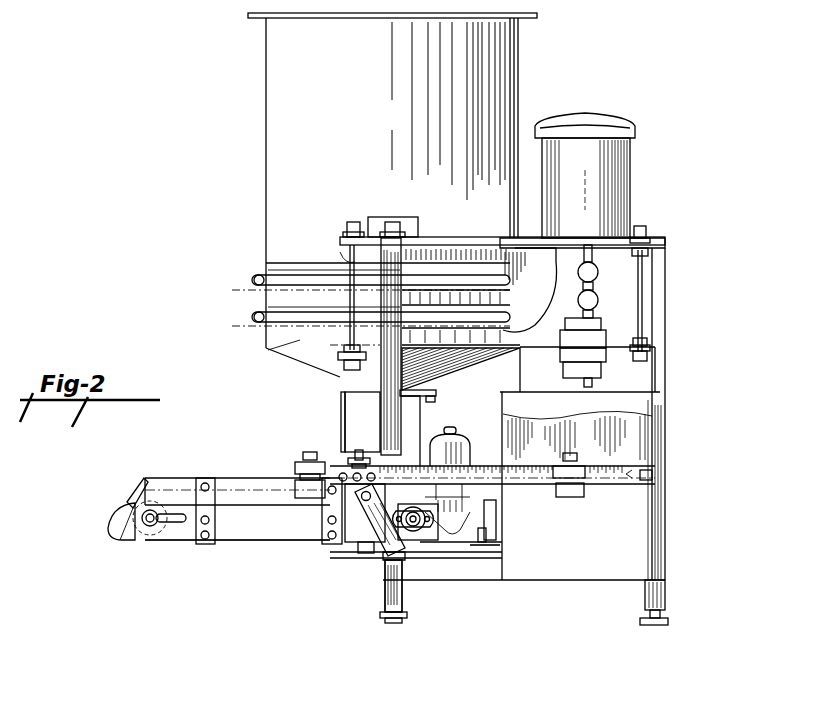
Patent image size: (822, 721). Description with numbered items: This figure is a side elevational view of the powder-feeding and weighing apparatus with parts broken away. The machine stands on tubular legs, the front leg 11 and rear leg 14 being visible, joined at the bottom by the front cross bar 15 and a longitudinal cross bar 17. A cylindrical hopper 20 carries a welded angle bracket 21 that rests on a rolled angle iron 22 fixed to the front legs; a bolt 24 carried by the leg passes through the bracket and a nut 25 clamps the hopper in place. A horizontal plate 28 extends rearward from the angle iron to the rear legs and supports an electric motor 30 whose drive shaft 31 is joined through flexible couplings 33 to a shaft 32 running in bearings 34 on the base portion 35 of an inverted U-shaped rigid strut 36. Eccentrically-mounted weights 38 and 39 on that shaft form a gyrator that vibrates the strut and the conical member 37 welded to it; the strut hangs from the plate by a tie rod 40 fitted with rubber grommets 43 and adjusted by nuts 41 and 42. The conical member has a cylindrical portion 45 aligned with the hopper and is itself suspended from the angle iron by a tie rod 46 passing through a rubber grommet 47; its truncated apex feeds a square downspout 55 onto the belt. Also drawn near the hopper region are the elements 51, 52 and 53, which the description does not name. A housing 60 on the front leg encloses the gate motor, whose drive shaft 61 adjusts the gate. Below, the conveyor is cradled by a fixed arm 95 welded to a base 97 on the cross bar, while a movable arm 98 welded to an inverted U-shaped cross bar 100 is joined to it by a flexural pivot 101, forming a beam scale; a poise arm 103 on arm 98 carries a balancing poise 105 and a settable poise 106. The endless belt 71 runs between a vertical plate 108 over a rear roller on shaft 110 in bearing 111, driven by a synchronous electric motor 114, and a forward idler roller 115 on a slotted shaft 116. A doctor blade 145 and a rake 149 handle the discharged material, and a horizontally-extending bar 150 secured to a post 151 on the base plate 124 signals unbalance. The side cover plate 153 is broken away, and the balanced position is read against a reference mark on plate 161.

The tubular leg 11 is at (400, 252).
The tubular leg 14 is at (660, 275).
The front cross bar 15 is at (398, 575).
The longitudinal cross bar 17 is at (490, 562).
The cylindrical hopper 20 is at (266, 66).
The angle bracket 21 is at (412, 220).
The angle iron 22 is at (458, 240).
The bolt 24 is at (393, 225).
The nut 25 is at (372, 225).
The horizontal plate 28 is at (515, 238).
The electric motor 30 is at (630, 150).
The drive shaft 31 is at (592, 252).
The shaft 32 is at (592, 386).
The flexible couplings 33 is at (566, 281).
The bearings 34 is at (566, 340).
The base portion 35 is at (556, 356).
The rigid strut 36 is at (655, 386).
The conical member 37 is at (295, 366).
The eccentrically-mounted weights 38 is at (576, 330).
The eccentrically-mounted weights 39 is at (570, 380).
The tie rod 40 is at (645, 296).
The nuts 41 is at (645, 230).
The nuts 42 is at (647, 340).
The rubber grommets 43 is at (650, 240).
The cylindrical portion 45 is at (267, 357).
The tie rod 46 is at (350, 262).
The rubber grommet 47 is at (356, 360).
The center line 51 is at (260, 318).
The guide rod 52 is at (292, 275).
The roller 53 is at (255, 278).
The downspout 55 is at (416, 420).
The housing 60 is at (345, 398).
The drive shaft 61 is at (345, 450).
The endless belt 71 is at (252, 478).
The arm 95 is at (378, 538).
The base 97 is at (396, 545).
The arm 98 is at (366, 500).
The cross bar 100 is at (372, 552).
The flexural pivot 101 is at (335, 538).
The poise arm 103 is at (305, 462).
The poise 105 is at (305, 492).
The poise 106 is at (578, 496).
The vertical plate 108 is at (183, 528).
The shaft 110 is at (420, 526).
The bearing 111 is at (420, 524).
The synchronous electric motor 114 is at (458, 434).
The forward belt roller 115 is at (162, 524).
The shaft 116 is at (148, 526).
The base plate 124 is at (490, 548).
The doctor blade 145 is at (110, 528).
The rake 149 is at (133, 500).
The horizontally-extending bar 150 is at (500, 520).
The post 151 is at (498, 534).
The side cover plate 153 is at (668, 440).
The plate 161 is at (660, 472).